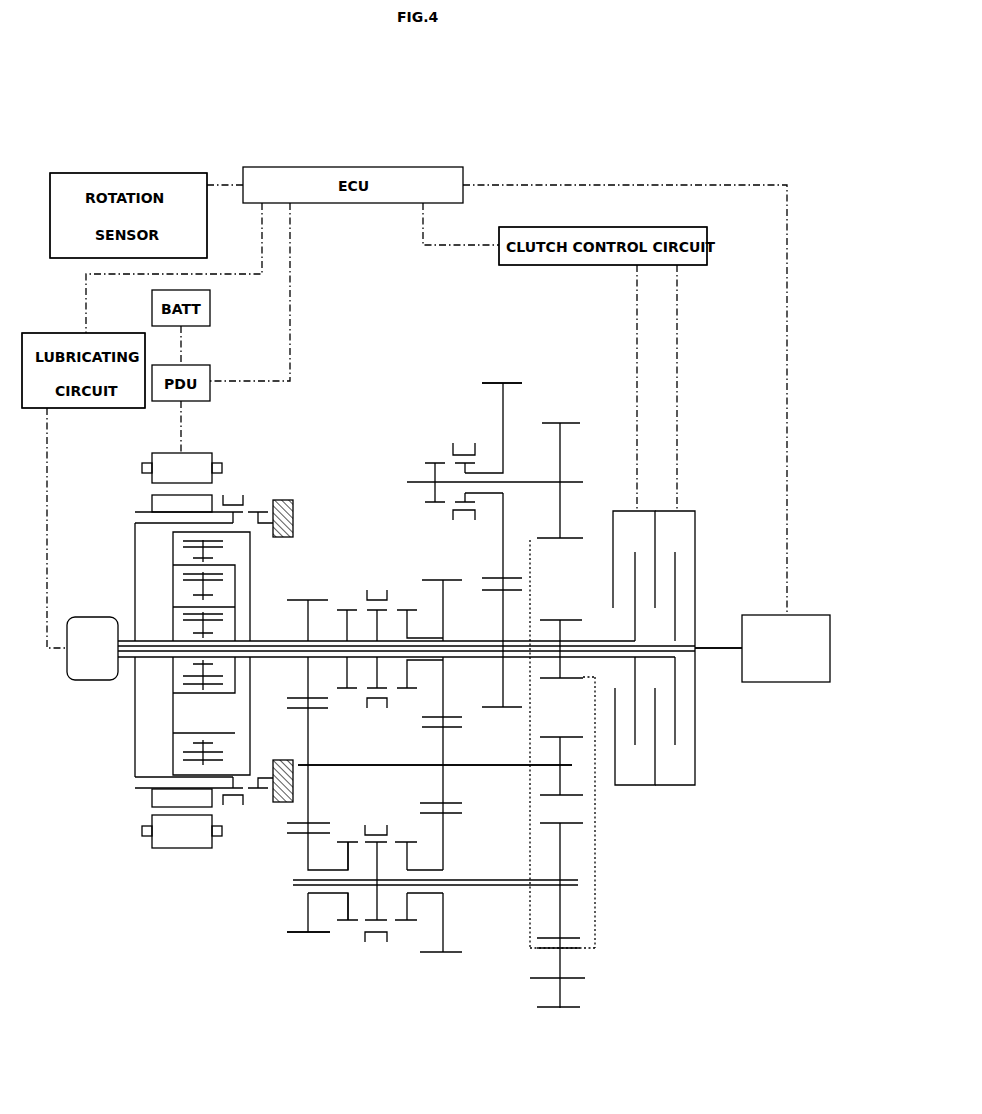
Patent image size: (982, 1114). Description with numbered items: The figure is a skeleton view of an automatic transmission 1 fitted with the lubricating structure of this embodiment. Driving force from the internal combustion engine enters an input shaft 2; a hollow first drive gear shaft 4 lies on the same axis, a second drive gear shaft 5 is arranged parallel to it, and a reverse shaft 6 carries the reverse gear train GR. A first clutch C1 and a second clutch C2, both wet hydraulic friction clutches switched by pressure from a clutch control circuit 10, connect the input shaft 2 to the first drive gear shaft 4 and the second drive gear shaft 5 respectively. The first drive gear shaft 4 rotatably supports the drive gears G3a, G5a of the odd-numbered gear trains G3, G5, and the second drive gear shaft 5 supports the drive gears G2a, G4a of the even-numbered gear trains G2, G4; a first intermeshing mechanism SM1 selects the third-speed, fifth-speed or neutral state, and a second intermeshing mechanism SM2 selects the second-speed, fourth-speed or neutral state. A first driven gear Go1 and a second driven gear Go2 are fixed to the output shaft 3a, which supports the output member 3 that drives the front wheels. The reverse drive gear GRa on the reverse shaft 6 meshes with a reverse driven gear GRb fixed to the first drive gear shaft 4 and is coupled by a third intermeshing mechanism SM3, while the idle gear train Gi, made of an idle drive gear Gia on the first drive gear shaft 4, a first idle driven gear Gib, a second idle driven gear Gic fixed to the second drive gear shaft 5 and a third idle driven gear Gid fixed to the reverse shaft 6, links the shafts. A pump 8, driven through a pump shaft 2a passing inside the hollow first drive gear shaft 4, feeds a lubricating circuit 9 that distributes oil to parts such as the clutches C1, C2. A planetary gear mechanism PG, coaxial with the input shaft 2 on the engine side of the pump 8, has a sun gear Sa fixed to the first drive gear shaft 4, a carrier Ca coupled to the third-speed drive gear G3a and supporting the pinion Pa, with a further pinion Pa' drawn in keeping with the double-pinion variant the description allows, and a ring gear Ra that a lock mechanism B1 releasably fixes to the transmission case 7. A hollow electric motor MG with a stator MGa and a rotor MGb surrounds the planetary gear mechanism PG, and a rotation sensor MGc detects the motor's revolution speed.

The automatic transmission 1 is at (242, 108).
The input shaft 2 is at (716, 646).
The pump shaft 2a is at (689, 656).
The output member 3 is at (552, 798).
The output shaft 3a is at (572, 767).
The first drive gear shaft 4 is at (597, 641).
The second drive gear shaft 5 is at (497, 883).
The reverse shaft 6 is at (524, 485).
The transmission case 7 is at (283, 500).
The pump 8 is at (95, 617).
The lubricating circuit 9 is at (40, 333).
The clutch control circuit 10 is at (707, 247).
The electric motor MG is at (176, 856).
The stator MGa is at (152, 462).
The rotor MGb is at (152, 503).
The rotation sensor MGc is at (142, 173).
The lock mechanism B1 is at (236, 490).
The planetary gear mechanism PG is at (244, 631).
The sun gear Sa is at (190, 621).
The ring gear Ra is at (190, 758).
The carrier Ca is at (228, 693).
The pinion Pa is at (180, 634).
The pinion gear Pa' is at (180, 544).
The first clutch C1 is at (675, 648).
The second clutch C2 is at (634, 648).
The 3rd-speed gear train G3 is at (316, 597).
The 3rd-speed drive gear G3a is at (318, 700).
The 5th-speed gear train G5 is at (443, 599).
The 5th-speed drive gear G5a is at (450, 720).
The 2nd-speed gear train G2 is at (310, 940).
The 2nd-speed drive gear G2a is at (300, 935).
The 4th-speed gear train G4 is at (443, 960).
The 4th-speed drive gear G4a is at (462, 954).
The first driven gear Go1 is at (298, 826).
The second driven gear Go2 is at (450, 808).
The first intermeshing mechanism SM1 is at (384, 597).
The second intermeshing mechanism SM2 is at (378, 946).
The third intermeshing mechanism SM3 is at (451, 439).
The reverse gear train GR is at (484, 366).
The reverse drive gear GRa is at (510, 383).
The reverse driven gear GRb is at (493, 580).
The idle gear train Gi is at (561, 1024).
The idle drive gear Gia is at (558, 680).
The first idle driven gear Gib is at (568, 1010).
The second idle driven gear Gic is at (573, 941).
The third idle driven gear Gid is at (563, 423).